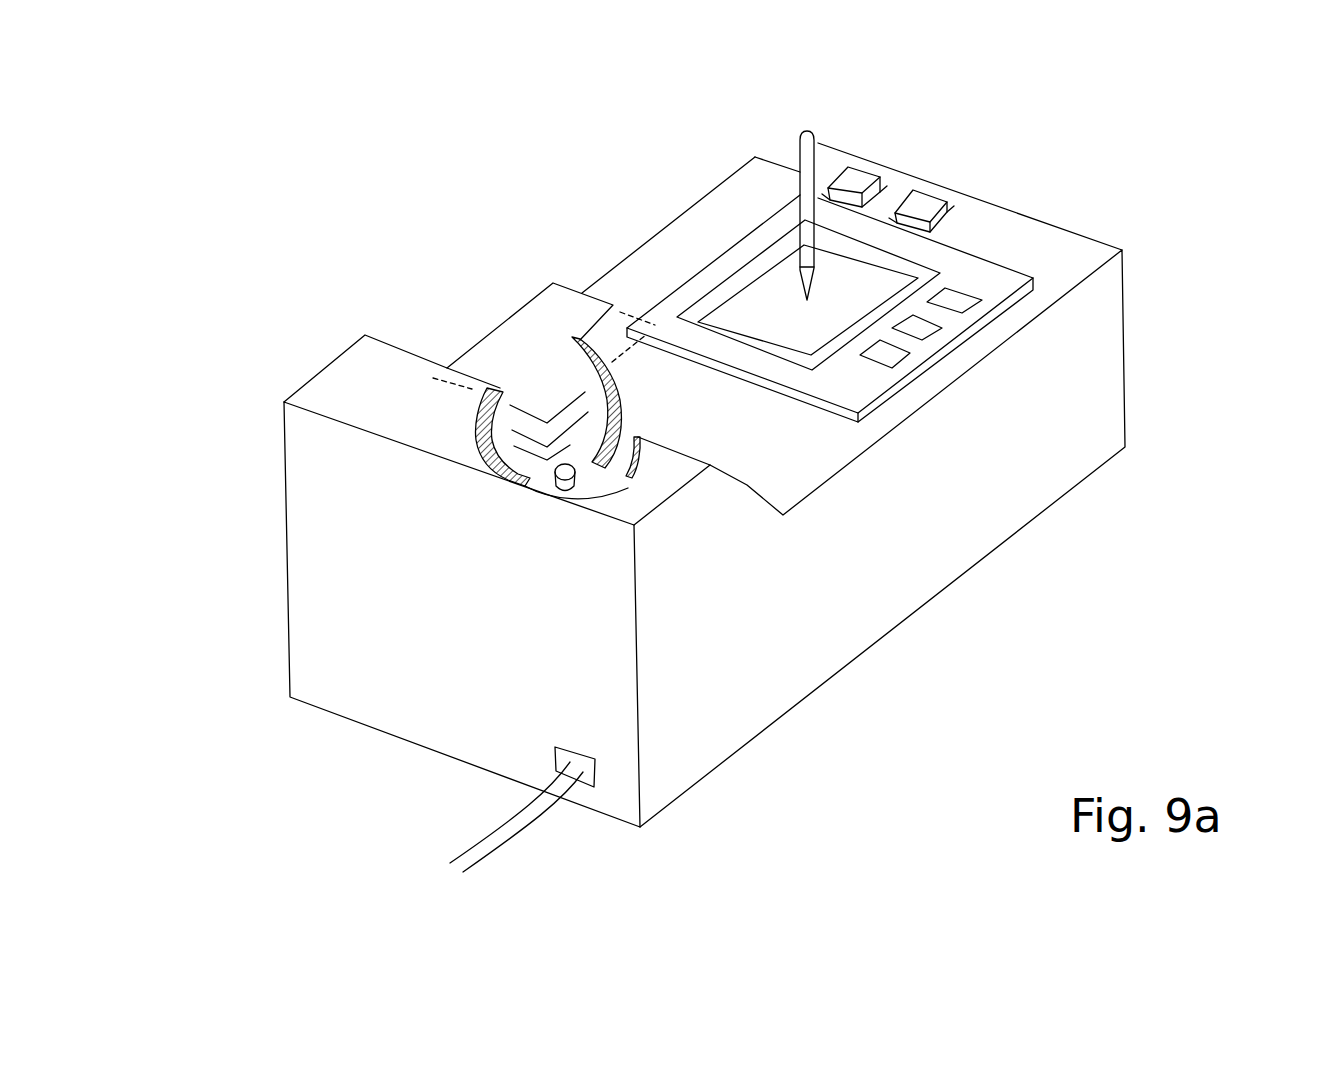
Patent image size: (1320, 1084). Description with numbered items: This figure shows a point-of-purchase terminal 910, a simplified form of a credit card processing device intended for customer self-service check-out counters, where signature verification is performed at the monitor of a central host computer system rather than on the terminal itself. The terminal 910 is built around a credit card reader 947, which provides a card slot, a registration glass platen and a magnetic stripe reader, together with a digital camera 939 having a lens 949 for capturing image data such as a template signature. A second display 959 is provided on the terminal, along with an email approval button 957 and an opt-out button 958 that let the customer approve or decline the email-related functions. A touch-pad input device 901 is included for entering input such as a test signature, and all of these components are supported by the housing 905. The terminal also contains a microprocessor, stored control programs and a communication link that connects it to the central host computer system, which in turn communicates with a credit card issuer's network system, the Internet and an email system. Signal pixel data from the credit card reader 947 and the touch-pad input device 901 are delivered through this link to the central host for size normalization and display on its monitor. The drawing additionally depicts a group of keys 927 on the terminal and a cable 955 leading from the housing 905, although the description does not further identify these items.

The touch-pad input device 901 is at (774, 485).
The housing 905 is at (743, 548).
The point-of-purchase (POP) terminal 910 is at (298, 334).
The function keys 927 is at (967, 337).
The digital camera 939 is at (600, 462).
The credit card reader 947 is at (683, 230).
The lens 949 is at (605, 428).
The cable 955 is at (505, 840).
The email approval button 957 is at (858, 178).
The opt-out button 958 is at (922, 203).
The second display 959 is at (878, 485).